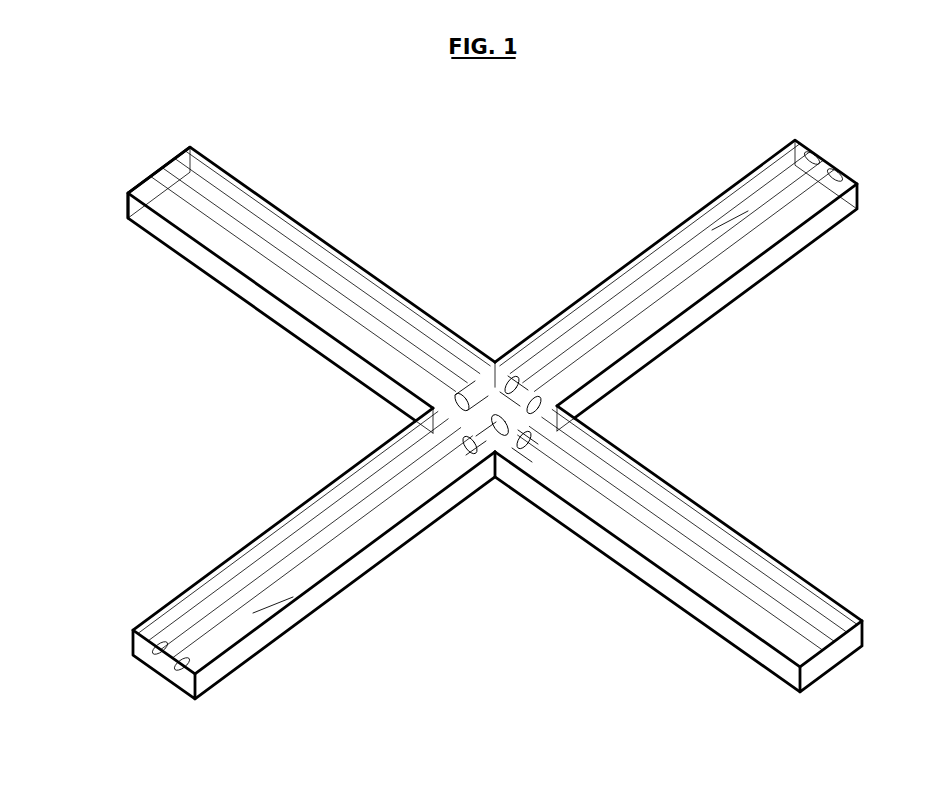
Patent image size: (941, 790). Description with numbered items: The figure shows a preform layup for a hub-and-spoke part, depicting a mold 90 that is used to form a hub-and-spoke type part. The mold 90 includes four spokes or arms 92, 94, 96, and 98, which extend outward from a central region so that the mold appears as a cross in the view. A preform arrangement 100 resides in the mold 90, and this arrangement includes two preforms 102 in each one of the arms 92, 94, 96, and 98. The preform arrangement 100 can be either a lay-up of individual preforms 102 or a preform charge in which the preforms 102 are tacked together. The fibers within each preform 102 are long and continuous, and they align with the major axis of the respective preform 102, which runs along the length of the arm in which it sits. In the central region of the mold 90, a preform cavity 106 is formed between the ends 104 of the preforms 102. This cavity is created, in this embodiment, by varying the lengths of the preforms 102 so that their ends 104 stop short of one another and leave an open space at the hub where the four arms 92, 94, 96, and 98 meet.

The mold 90 is at (244, 306).
The arm 92 is at (160, 237).
The arm 94 is at (268, 532).
The arm 96 is at (697, 503).
The arm 98 is at (787, 259).
The preform arrangement 100 is at (352, 186).
The preform 102 is at (748, 211).
The end 104 is at (505, 433).
The preform cavity 106 is at (493, 407).